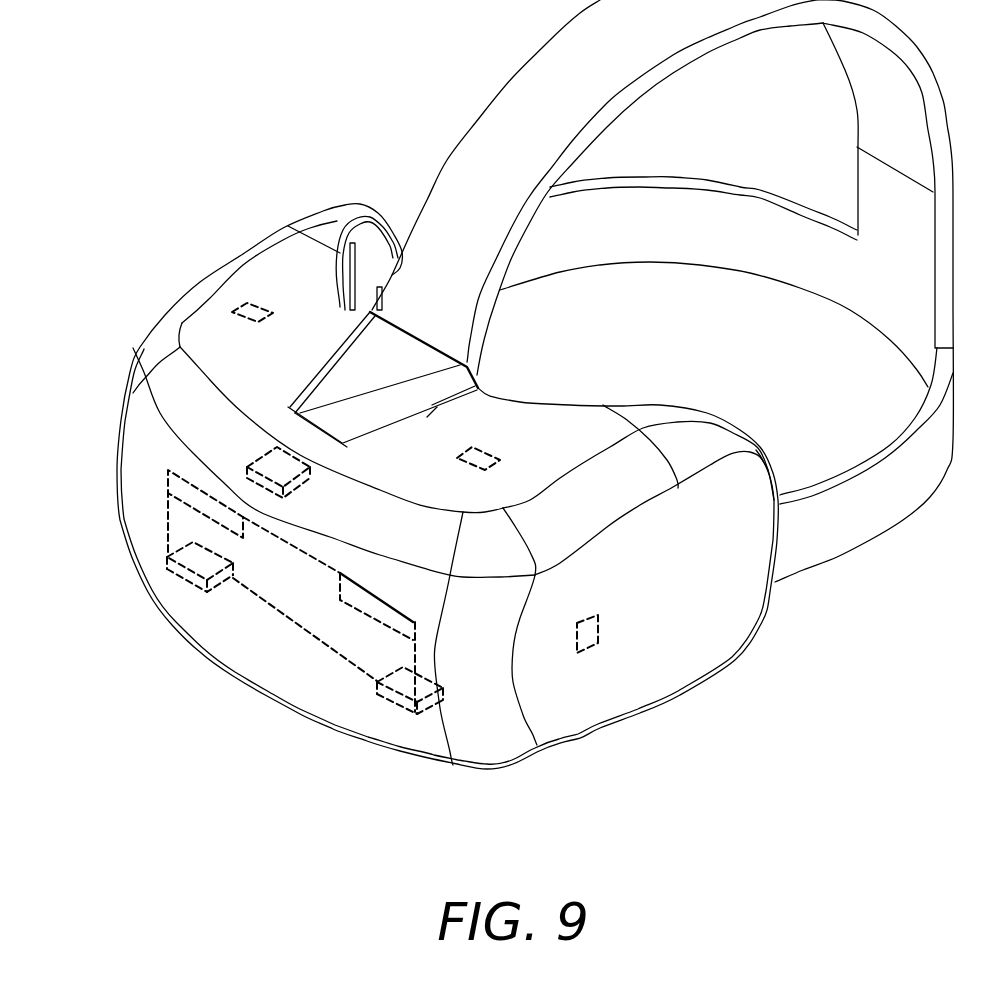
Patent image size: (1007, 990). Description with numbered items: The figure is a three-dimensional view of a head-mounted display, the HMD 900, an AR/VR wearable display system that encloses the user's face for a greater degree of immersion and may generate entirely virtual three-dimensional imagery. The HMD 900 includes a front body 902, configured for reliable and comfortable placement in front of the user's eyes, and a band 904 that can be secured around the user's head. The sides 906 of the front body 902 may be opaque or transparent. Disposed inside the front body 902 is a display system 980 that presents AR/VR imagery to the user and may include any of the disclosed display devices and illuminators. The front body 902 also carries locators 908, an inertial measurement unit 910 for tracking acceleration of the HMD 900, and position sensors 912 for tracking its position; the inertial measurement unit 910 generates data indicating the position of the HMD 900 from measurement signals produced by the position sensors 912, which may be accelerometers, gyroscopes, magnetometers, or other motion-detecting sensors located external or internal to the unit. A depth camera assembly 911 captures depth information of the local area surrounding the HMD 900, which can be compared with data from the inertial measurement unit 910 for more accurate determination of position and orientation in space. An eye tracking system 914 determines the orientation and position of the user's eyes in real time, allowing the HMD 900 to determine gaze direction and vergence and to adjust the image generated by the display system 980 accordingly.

The head-mounted display (HMD) 900 is at (316, 118).
The front body 902 is at (133, 344).
The band 904 is at (722, 190).
The sides 906 is at (683, 595).
The locators 908 is at (253, 303).
The inertial measurement unit (IMU) 910 is at (175, 570).
The depth camera assembly (DCA) 911 is at (280, 465).
The position sensors 912 is at (400, 693).
The eye tracking system 914 is at (183, 490).
The display system 980 is at (307, 592).